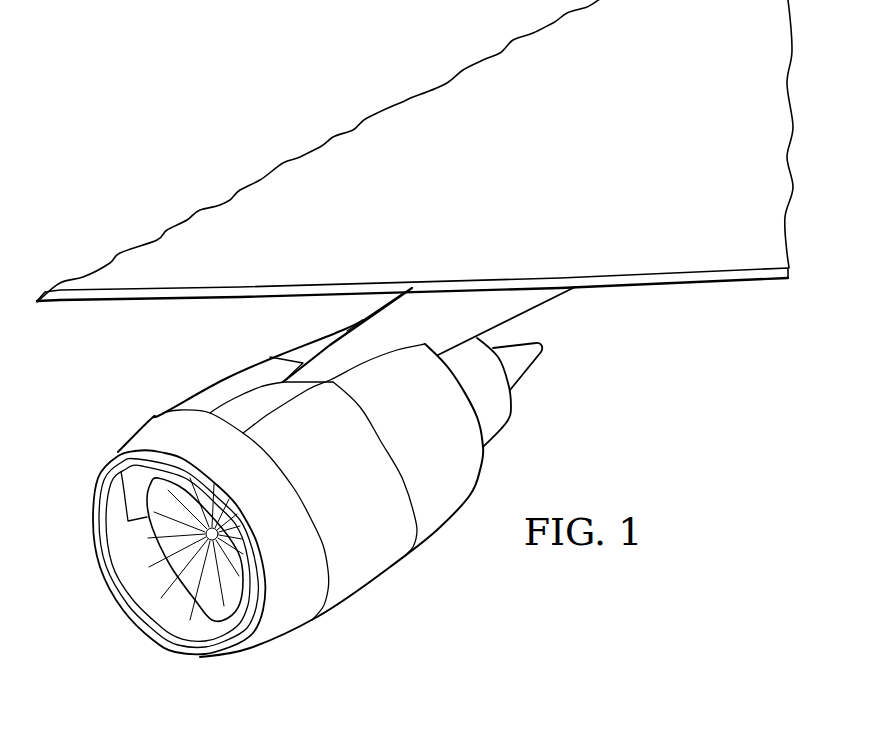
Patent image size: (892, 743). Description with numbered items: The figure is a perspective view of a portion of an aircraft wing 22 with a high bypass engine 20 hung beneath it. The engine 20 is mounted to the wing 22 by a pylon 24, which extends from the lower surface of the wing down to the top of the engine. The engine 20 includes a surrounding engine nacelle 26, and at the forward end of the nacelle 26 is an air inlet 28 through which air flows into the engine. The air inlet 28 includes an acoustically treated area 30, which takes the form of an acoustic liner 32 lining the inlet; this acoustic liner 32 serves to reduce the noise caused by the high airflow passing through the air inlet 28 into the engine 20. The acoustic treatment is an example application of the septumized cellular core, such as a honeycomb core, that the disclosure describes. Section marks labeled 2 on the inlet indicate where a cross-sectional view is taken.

The high bypass engine 20 is at (178, 383).
The aircraft wing 22 is at (280, 168).
The pylon 24 is at (513, 310).
The engine nacelle 26 is at (375, 563).
The air inlet 28 is at (120, 522).
The acoustically treated area 30 is at (130, 553).
The acoustic liner 32 is at (200, 630).
The section line 2- 2 is at (177, 608).